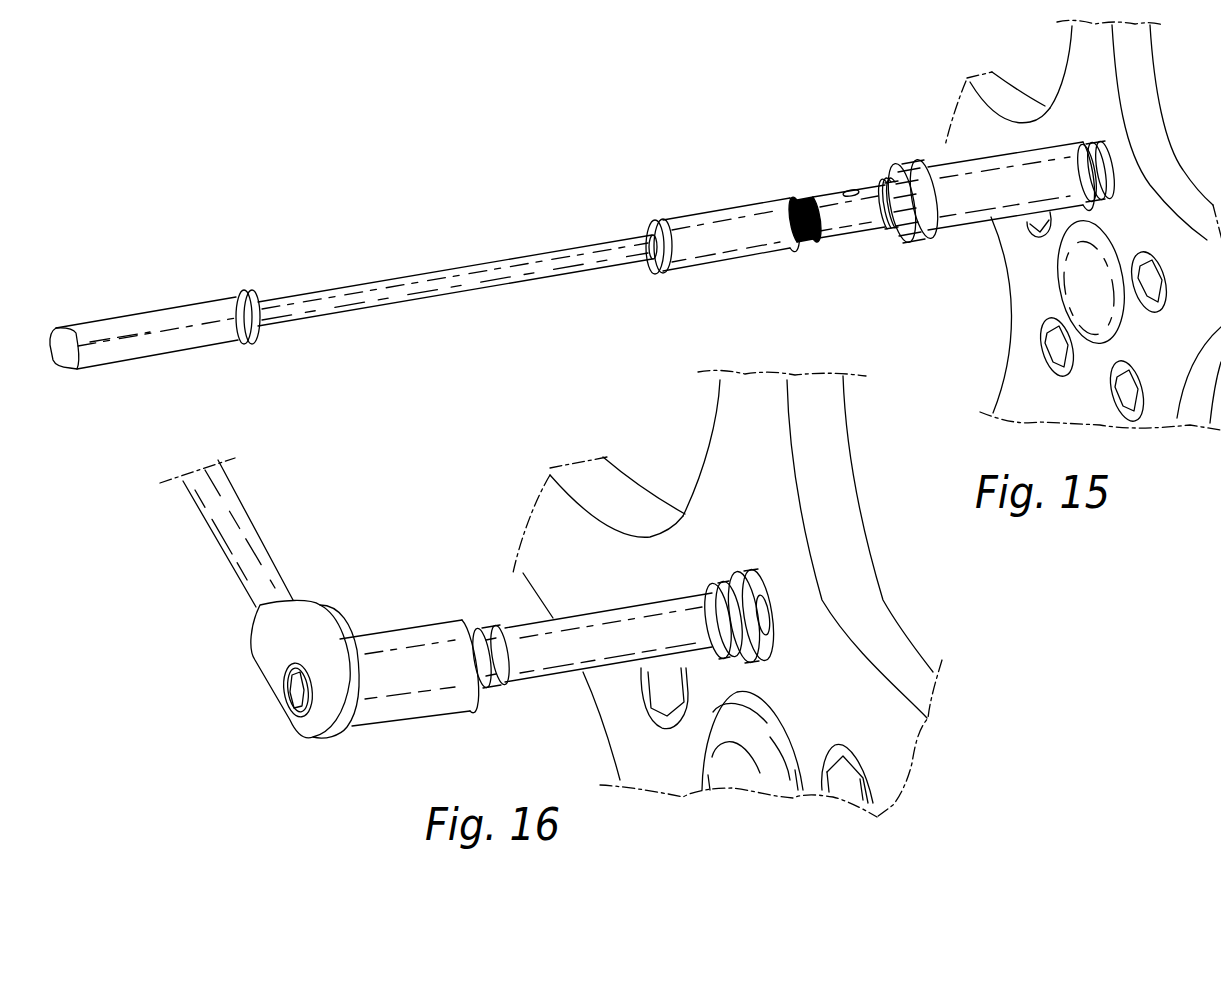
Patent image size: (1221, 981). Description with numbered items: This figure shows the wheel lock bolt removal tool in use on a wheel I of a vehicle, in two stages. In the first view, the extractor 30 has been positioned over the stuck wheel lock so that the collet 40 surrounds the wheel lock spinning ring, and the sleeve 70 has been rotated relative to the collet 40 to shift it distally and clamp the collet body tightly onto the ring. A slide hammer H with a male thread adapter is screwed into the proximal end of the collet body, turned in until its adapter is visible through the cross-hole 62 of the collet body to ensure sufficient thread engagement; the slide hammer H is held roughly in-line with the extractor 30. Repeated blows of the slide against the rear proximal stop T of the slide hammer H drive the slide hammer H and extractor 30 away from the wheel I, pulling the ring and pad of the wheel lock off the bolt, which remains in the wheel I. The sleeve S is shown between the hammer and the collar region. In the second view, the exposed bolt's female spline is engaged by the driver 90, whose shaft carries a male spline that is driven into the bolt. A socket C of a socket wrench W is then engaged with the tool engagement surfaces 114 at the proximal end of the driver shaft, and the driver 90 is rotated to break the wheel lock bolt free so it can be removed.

In FIG. 15, the extractor 30 is at (862, 92).
In FIG. 15, the collet 40 is at (818, 185).
In FIG. 15, the cross-hole 62 is at (851, 190).
In FIG. 15, the sleeve 70 is at (958, 238).
In FIG. 16, the driver 90 is at (568, 690).
In FIG. 16, the tool engagement surfaces 114 is at (496, 640).
In FIG. 15, the proximal stop T is at (243, 290).
In FIG. 15, the slide hammer H is at (316, 262).
In FIG. 15, the sleeve S is at (704, 217).
In FIG. 15, the wheel I is at (1190, 97).
In FIG. 16, the wheel I is at (952, 708).
In FIG. 16, the wheel lock W is at (198, 690).
In FIG. 16, the socket C is at (403, 633).